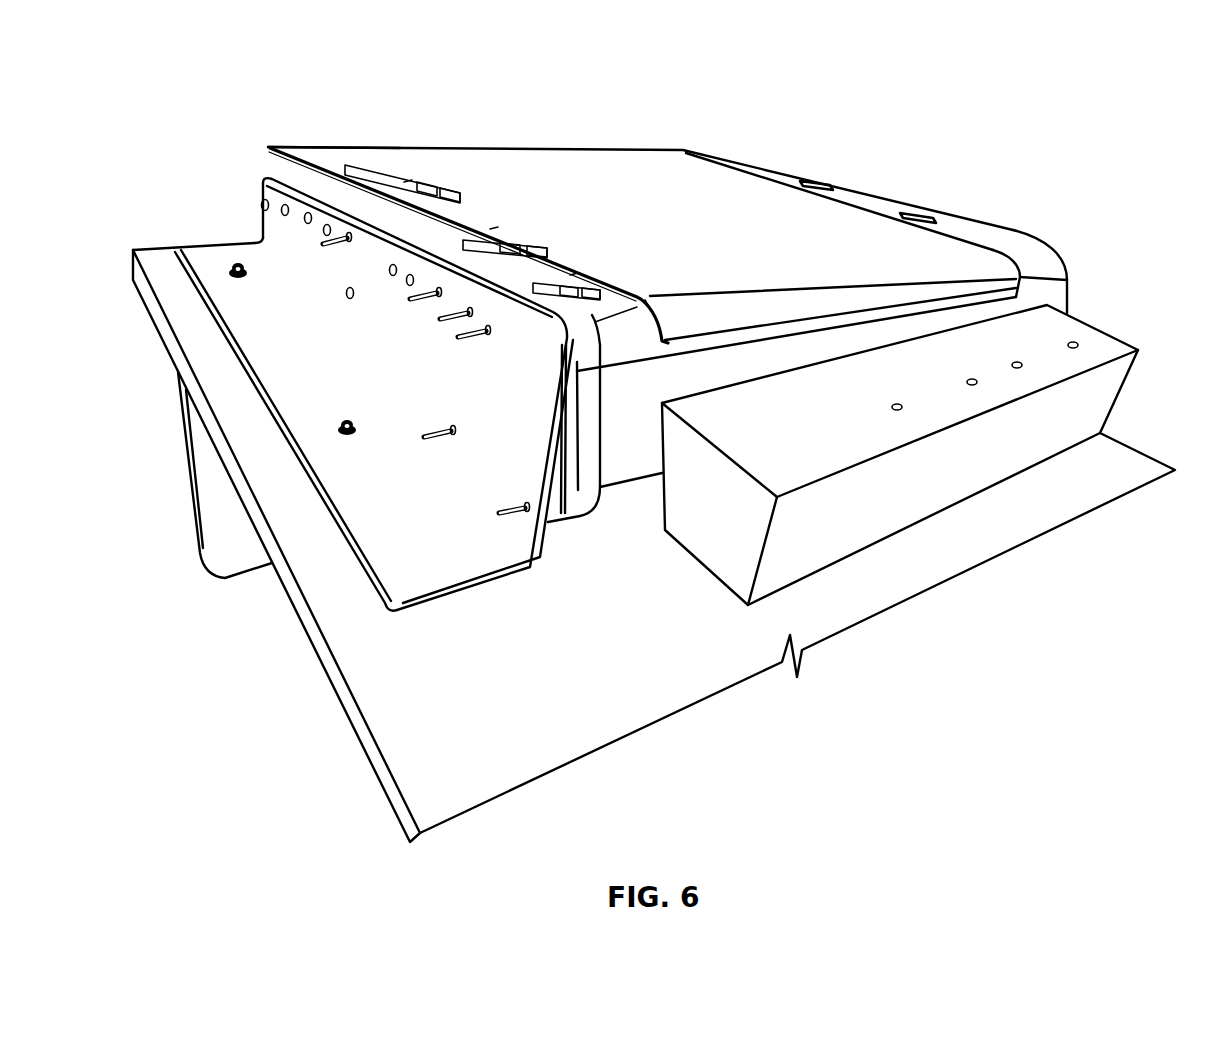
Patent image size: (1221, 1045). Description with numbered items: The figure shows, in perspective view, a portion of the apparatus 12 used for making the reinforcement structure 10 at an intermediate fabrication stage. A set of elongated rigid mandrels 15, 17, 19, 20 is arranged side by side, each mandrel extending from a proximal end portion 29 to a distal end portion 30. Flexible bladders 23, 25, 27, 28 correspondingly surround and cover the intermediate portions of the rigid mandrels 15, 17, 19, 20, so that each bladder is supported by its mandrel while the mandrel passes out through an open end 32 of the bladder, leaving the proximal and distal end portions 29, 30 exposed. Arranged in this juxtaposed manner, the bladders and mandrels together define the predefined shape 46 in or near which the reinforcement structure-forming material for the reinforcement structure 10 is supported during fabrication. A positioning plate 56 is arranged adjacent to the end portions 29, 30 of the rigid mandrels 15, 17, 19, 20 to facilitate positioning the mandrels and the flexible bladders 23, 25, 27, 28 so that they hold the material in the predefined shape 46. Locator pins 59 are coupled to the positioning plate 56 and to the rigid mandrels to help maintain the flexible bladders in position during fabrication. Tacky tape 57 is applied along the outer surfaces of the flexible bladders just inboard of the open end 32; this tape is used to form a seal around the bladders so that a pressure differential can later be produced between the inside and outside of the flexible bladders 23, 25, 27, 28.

The reinforcement structure 10 is at (757, 210).
The apparatus 12 is at (255, 257).
The rigid mandrel 15 is at (407, 180).
The rigid mandrel 17 is at (493, 227).
The rigid mandrel 19 is at (573, 273).
The rigid mandrel 20 is at (643, 290).
The flexible bladder 23 is at (380, 170).
The flexible bladder 25 is at (463, 217).
The flexible bladder 27 is at (540, 262).
The flexible bladder 28 is at (605, 300).
The proximal end portion 29 is at (340, 175).
The distal end portion 30 is at (1060, 248).
The open end 32 is at (590, 481).
The predefined shape 46 is at (746, 106).
The positioning plate 56 is at (398, 568).
The tacky tape 57 is at (953, 227).
The locator pins 59 is at (322, 243).